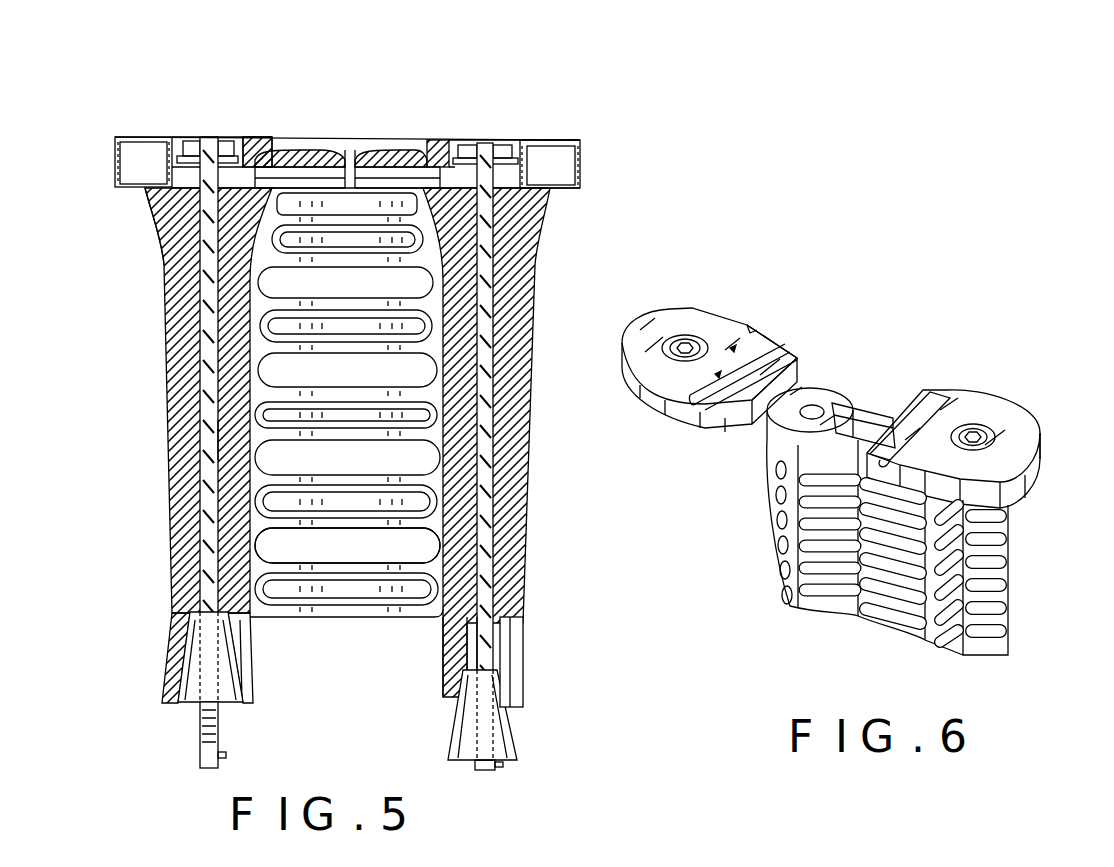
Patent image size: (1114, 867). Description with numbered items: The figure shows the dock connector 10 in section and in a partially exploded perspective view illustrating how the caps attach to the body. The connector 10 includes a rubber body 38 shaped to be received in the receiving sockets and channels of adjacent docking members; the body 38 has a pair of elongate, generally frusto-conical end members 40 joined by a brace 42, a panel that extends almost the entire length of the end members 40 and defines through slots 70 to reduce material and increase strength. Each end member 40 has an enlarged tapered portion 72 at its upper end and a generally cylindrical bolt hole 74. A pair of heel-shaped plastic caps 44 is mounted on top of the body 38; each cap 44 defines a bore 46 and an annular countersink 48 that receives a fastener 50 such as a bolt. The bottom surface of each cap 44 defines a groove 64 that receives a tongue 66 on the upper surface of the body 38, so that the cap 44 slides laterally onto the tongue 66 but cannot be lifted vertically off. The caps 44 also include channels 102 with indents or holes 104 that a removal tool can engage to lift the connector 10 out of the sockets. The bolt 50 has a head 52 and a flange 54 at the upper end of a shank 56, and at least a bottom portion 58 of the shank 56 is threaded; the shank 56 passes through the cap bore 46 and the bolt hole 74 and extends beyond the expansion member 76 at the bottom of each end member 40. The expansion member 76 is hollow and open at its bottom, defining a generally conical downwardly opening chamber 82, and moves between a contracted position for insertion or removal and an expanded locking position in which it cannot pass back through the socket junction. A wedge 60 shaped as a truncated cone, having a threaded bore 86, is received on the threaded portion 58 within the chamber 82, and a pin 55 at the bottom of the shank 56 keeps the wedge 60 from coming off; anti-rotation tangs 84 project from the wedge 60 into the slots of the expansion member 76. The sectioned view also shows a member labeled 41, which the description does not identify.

In FIG. 5, the connector 10 is at (596, 156).
In FIG. 6, the connector 10 is at (1043, 453).
In FIG. 5, the connector body 38 is at (532, 512).
In FIG. 6, the connector body 38 is at (810, 607).
In FIG. 6, the end members 40 is at (1005, 570).
In FIG. 5, the threaded rod 41 is at (203, 322).
In FIG. 5, the brace 42 is at (337, 620).
In FIG. 6, the brace 42 is at (893, 622).
In FIG. 5, the cap 44 is at (560, 140).
In FIG. 6, the cap 44 is at (715, 330).
In FIG. 5, the bore 46 is at (552, 172).
In FIG. 5, the annular countersink 48 is at (188, 137).
In FIG. 6, the annular countersink 48 is at (657, 388).
In FIG. 5, the fastener 50 is at (482, 138).
In FIG. 6, the fastener 50 is at (682, 338).
In FIG. 5, the head 52 is at (207, 143).
In FIG. 5, the flange 54 is at (233, 150).
In FIG. 5, the pin 55 is at (223, 753).
In FIG. 5, the shank 56 is at (207, 433).
In FIG. 5, the threaded portion 58 is at (200, 727).
In FIG. 5, the wedge 60 is at (230, 688).
In FIG. 5, the groove 64 is at (363, 172).
In FIG. 6, the groove 64 is at (733, 420).
In FIG. 5, the tongue 66 is at (303, 180).
In FIG. 6, the tongue 66 is at (870, 415).
In FIG. 5, the through slots 70 is at (322, 543).
In FIG. 5, the enlarged tapered portion 72 is at (150, 224).
In FIG. 6, the bolt hole 74 is at (812, 405).
In FIG. 5, the expansion member 76 is at (172, 647).
In FIG. 5, the chamber 82 is at (470, 645).
In FIG. 5, the anti-rotation tangs 84 is at (452, 700).
In FIG. 5, the threaded bore 86 is at (495, 708).
In FIG. 5, the channels 102 is at (415, 160).
In FIG. 6, the channels 102 is at (752, 330).
In FIG. 6, the indents 104 is at (715, 375).